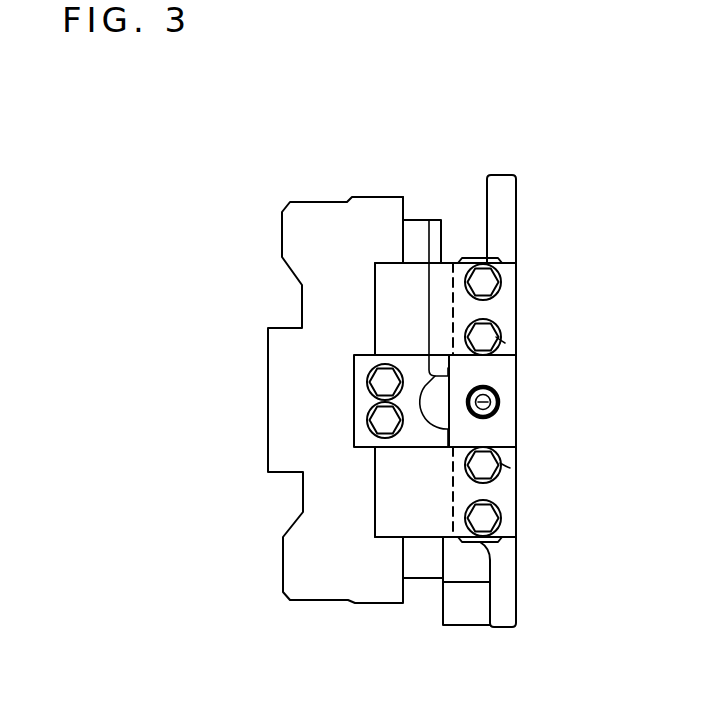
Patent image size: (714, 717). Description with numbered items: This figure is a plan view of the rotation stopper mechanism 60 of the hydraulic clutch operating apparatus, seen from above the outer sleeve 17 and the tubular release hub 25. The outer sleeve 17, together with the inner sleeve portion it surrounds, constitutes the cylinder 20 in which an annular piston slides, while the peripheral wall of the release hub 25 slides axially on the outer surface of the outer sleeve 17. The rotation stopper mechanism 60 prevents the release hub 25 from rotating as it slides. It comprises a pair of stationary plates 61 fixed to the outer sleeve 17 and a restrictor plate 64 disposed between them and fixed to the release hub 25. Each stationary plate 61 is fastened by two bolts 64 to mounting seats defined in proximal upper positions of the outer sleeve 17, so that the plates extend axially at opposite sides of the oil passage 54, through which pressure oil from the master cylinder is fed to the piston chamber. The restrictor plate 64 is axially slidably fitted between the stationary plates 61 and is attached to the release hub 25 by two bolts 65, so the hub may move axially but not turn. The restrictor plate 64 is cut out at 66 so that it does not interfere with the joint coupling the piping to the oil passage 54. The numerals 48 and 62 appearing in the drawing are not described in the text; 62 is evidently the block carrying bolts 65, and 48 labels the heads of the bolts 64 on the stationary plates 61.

The outer sleeve 17 is at (410, 237).
The cylinder 20 is at (413, 580).
The tubular release hub 25 is at (305, 253).
The bolts 48 is at (492, 320).
The oil passage 54 is at (498, 405).
The rotation stopper mechanism 60 is at (452, 258).
The stationary plates 61 is at (505, 343).
The clamp block 62 is at (357, 380).
The restrictor plate 64 is at (486, 470).
The bolts 65 is at (382, 385).
The cutout 66 is at (428, 223).